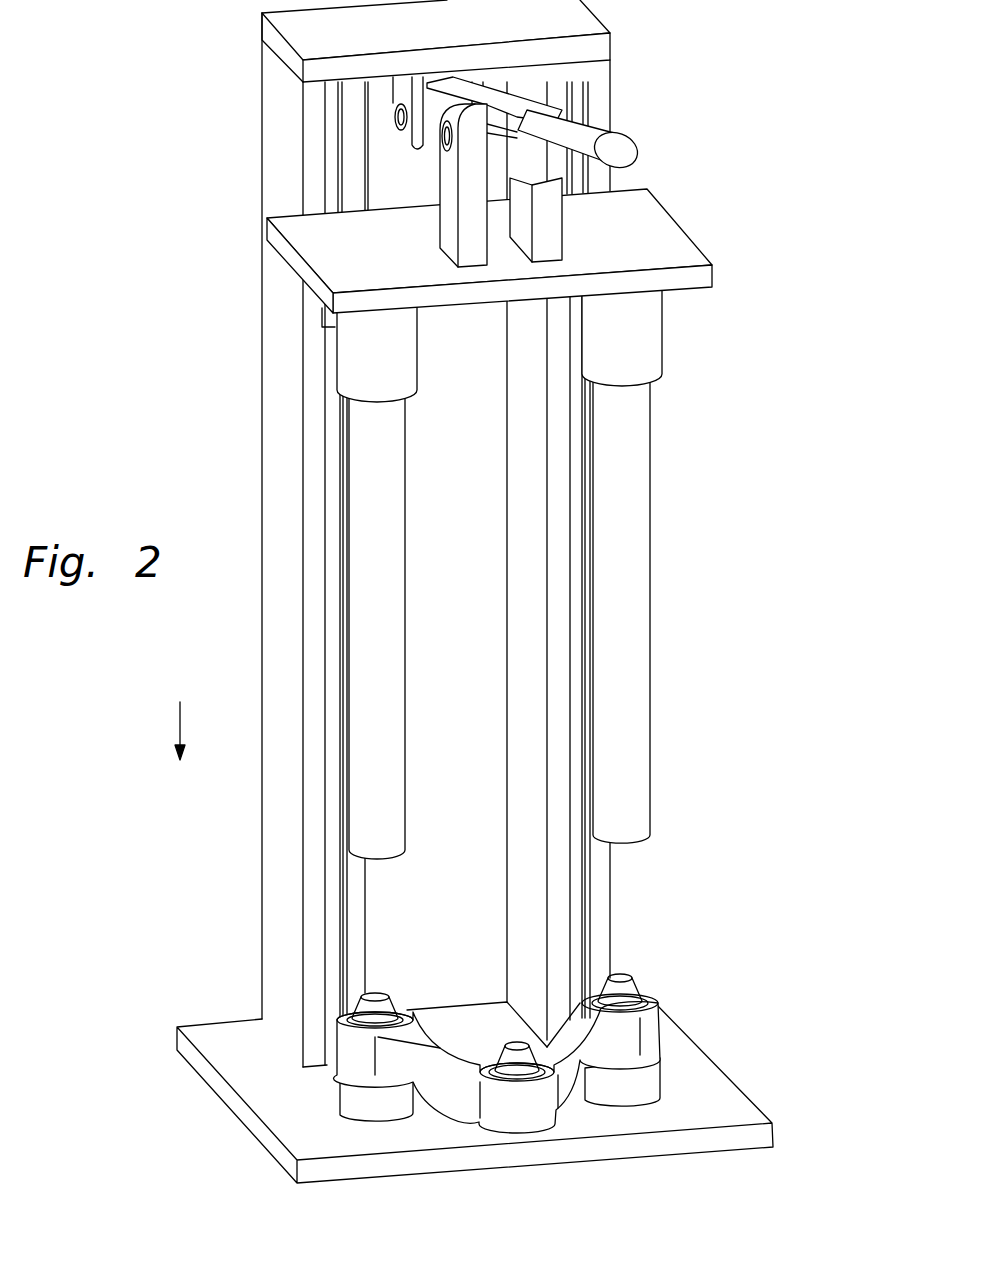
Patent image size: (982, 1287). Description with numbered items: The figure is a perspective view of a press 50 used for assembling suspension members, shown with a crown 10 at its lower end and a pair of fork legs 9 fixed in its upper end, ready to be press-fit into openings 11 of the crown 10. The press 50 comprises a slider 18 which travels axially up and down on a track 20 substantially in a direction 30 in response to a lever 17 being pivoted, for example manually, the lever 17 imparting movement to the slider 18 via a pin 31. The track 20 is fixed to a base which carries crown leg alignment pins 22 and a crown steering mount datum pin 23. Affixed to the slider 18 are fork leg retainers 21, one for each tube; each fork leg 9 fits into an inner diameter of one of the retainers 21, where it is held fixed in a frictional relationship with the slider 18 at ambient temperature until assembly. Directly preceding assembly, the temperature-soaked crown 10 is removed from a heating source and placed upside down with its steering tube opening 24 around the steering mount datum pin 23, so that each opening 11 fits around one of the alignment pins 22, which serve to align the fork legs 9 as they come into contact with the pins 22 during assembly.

The press 50 is at (150, 137).
The track 20 is at (312, 453).
The slider 18 is at (667, 230).
The lever 17 is at (623, 147).
The pin 31 is at (397, 125).
The fork leg retainers 21 is at (680, 337).
The fork legs 9 is at (672, 627).
The direction 30 is at (176, 718).
The openings 11 is at (643, 992).
The crown leg alignment pins 22 is at (683, 1080).
The crown steering mount datum pin 23 is at (517, 1058).
The steering tube opening 24 is at (512, 1073).
The crown 10 is at (540, 1112).